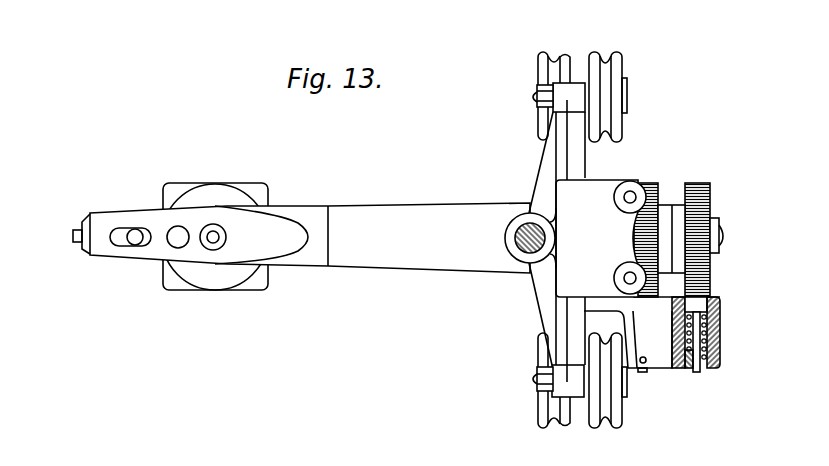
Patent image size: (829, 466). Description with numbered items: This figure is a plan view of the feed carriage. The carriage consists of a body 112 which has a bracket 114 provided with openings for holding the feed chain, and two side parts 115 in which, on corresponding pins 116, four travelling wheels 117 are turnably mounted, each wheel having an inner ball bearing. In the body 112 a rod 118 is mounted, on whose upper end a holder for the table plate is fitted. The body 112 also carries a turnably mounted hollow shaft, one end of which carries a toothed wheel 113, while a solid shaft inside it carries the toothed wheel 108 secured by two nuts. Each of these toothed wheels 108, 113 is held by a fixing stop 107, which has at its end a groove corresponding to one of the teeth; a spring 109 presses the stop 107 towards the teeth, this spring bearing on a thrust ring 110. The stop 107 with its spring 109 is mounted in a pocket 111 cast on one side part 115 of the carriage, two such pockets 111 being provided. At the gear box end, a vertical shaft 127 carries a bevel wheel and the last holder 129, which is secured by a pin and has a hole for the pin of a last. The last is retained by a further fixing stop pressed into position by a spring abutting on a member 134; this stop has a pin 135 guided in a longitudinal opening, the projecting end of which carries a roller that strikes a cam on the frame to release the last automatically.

The fixing stop 107 is at (698, 303).
The toothed wheel 108 is at (695, 203).
The spring 109 is at (706, 321).
The thrust ring 110 is at (690, 364).
The pocket 111 is at (655, 357).
The feed carriage body 112 is at (368, 215).
The toothed wheel 113 is at (659, 187).
The bracket 114 is at (635, 183).
The side part 115 is at (560, 143).
The pin 116 is at (534, 94).
The travelling wheel 117 is at (543, 53).
The rod 118 is at (520, 243).
The vertical shaft 127 is at (212, 238).
The last holder 129 is at (259, 281).
The member 134 is at (85, 241).
The pin 135 is at (132, 241).